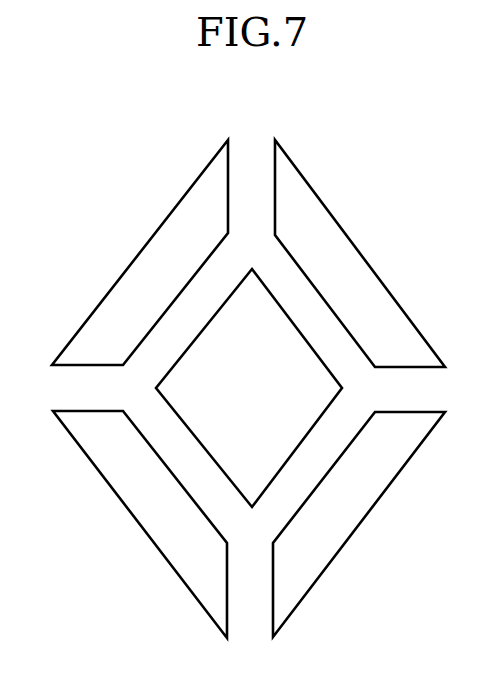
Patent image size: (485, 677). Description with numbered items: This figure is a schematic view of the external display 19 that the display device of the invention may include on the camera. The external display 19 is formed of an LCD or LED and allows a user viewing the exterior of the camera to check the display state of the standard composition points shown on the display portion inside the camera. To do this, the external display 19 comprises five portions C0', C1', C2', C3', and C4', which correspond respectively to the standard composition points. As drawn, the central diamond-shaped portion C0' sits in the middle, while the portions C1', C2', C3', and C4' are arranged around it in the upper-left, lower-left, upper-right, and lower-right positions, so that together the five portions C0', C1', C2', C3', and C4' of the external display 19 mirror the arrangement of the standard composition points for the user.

The external display 19 is at (248, 389).
The portion C0' is at (249, 388).
The portion C1' is at (140, 252).
The portion C2' is at (140, 524).
The portion C3' is at (360, 253).
The portion C4' is at (359, 524).